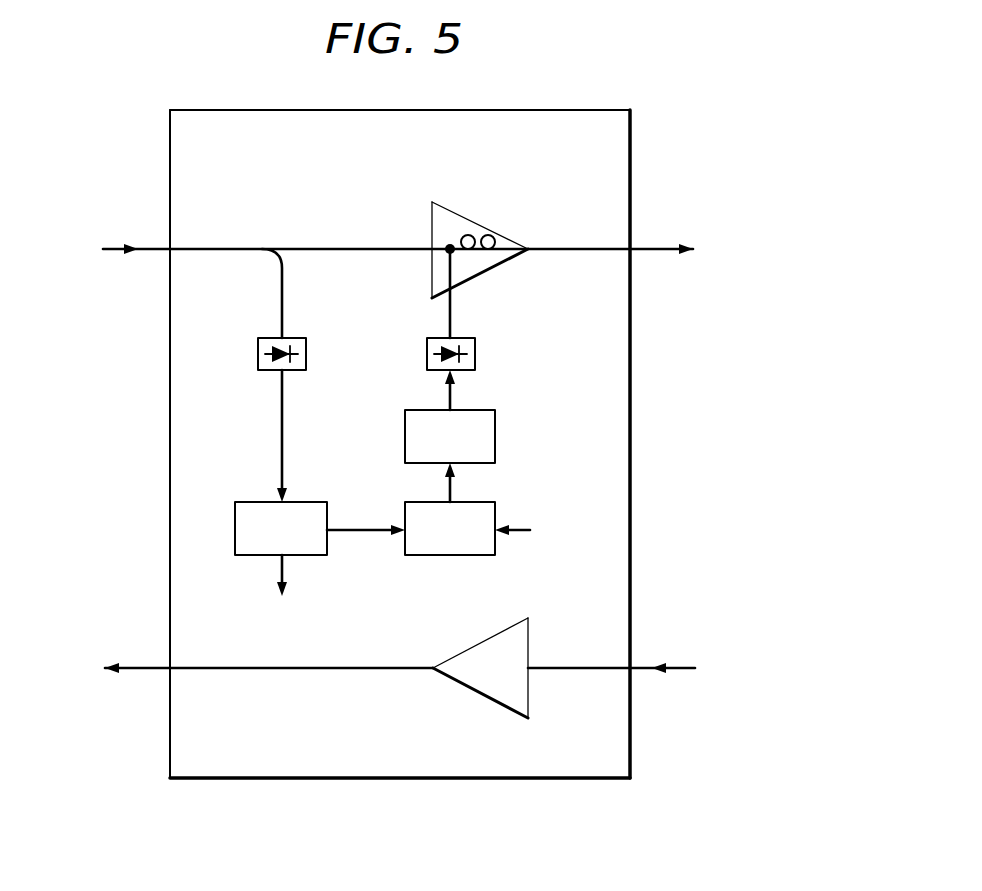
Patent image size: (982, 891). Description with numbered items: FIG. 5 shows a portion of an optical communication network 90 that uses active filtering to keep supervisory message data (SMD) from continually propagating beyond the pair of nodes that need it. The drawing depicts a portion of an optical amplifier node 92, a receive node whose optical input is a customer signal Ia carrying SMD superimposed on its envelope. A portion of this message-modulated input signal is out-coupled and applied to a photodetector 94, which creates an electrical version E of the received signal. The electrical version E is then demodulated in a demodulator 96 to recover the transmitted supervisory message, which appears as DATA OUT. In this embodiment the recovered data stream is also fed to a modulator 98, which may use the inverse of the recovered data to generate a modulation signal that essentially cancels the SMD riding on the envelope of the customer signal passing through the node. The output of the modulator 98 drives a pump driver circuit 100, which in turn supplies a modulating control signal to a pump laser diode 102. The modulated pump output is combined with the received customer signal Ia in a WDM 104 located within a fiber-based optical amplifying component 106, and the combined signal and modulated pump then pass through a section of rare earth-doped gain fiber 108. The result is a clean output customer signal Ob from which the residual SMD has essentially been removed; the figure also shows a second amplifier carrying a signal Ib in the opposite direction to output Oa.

The optical communication network 90 is at (122, 108).
The optical amplifier node 92 is at (550, 110).
The photodetector 94 is at (256, 354).
The demodulator 96 is at (234, 530).
The modulator 98 is at (449, 557).
The pump driver circuit 100 is at (497, 439).
The pump laser diode 102 is at (478, 355).
The WDM 104 is at (447, 246).
The fiber-based optical amplifying component 106 is at (455, 212).
The rare earth-doped gain fiber 108 is at (505, 238).